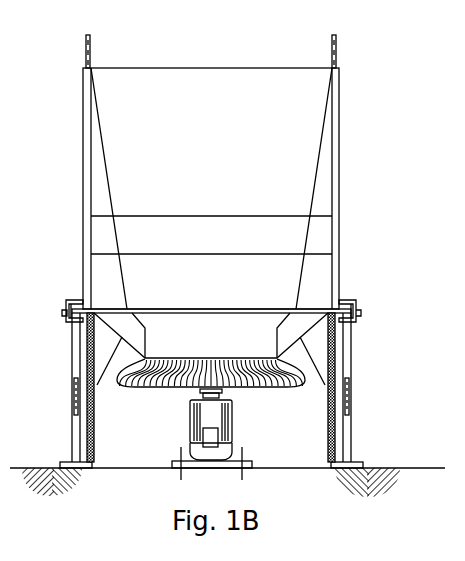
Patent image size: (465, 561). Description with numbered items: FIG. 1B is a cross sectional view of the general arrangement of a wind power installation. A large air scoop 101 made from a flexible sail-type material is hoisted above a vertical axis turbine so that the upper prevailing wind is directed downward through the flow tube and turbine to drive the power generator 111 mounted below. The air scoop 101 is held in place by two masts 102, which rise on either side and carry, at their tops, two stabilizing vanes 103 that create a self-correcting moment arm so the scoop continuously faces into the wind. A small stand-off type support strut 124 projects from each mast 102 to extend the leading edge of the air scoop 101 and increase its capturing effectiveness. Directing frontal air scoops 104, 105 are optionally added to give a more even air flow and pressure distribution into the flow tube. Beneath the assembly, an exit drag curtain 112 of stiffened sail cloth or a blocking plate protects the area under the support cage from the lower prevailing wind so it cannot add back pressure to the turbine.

The air scoop 101 is at (148, 68).
The masts 102 is at (82, 144).
The stabilizing vanes 103 is at (90, 36).
The directing frontal air scoop 104 is at (100, 222).
The directing frontal air scoop 105 is at (100, 263).
The power generator 111 is at (233, 422).
The exit drag curtain 112 is at (95, 436).
The stand-off type support strut 124 is at (105, 167).